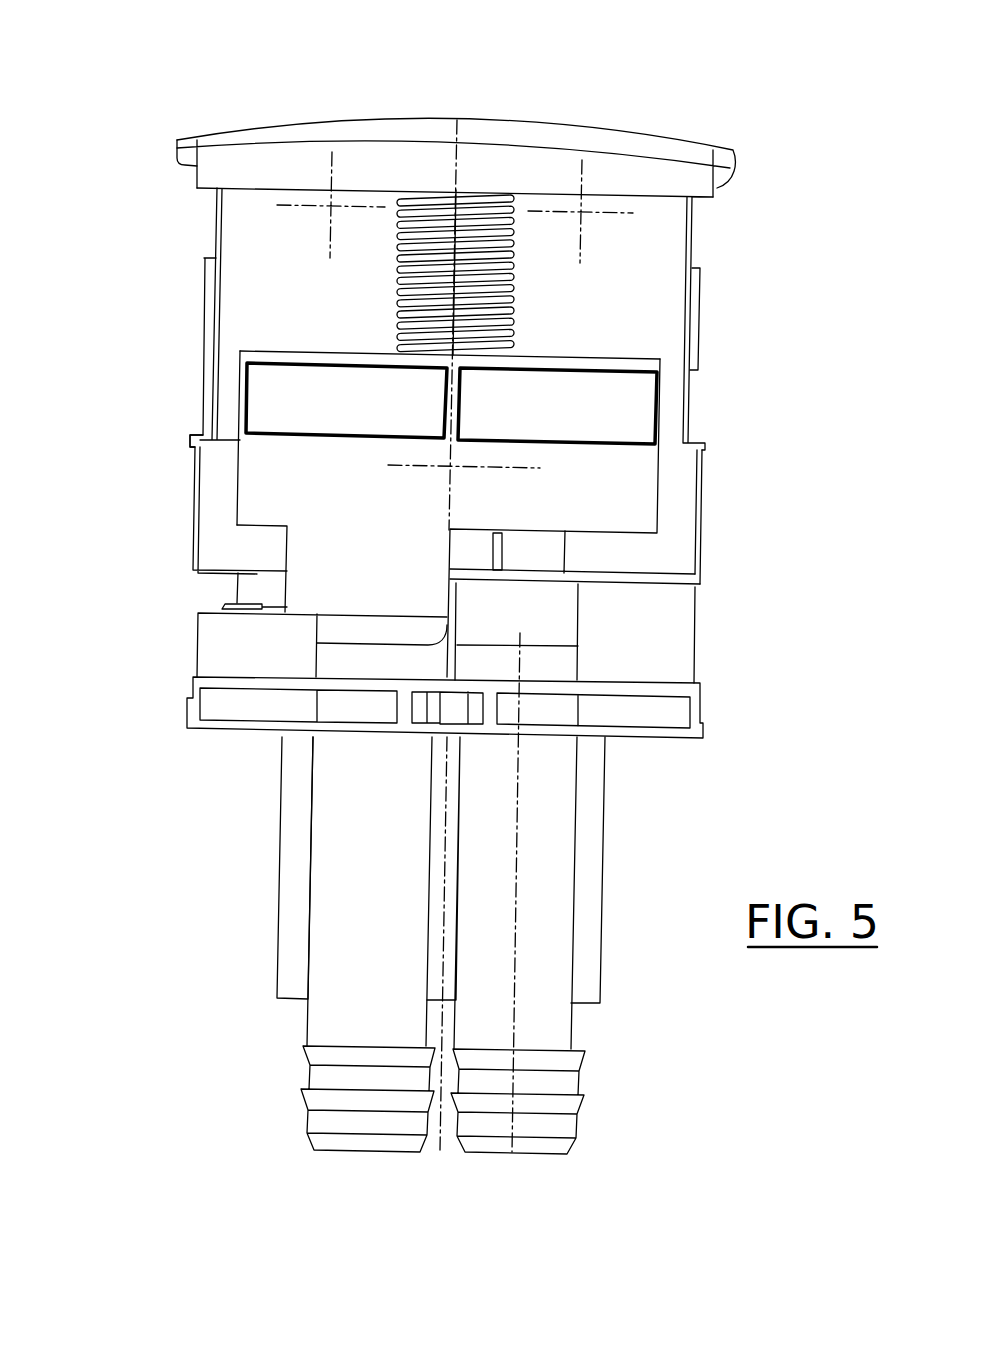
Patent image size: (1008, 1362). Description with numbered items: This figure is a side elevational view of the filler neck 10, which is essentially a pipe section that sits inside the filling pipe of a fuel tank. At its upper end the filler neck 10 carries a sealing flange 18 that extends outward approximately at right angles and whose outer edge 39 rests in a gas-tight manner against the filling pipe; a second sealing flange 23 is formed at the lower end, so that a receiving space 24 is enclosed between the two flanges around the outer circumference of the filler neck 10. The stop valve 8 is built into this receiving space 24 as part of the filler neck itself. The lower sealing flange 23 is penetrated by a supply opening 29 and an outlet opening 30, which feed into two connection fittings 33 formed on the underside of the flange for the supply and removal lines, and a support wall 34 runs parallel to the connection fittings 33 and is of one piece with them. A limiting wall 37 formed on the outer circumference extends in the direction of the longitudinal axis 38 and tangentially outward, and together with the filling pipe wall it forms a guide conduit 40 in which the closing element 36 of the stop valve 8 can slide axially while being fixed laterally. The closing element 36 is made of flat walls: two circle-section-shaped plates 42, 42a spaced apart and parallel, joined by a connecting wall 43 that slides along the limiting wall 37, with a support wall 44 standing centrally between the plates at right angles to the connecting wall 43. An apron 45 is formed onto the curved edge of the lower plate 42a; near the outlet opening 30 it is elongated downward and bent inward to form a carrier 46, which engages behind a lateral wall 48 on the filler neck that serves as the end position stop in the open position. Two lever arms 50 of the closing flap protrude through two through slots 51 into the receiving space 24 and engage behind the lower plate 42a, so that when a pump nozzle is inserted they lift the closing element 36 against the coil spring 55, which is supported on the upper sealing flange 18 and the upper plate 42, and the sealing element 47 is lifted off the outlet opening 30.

The stop valve 8 is at (615, 490).
The filler neck 10 is at (190, 217).
The sealing flange 18 is at (262, 130).
The sealing flange 23 is at (193, 702).
The receiving space 24 is at (258, 249).
The supply opening 29 is at (538, 680).
The outlet opening 30 is at (353, 677).
The connection fittings 33 is at (347, 1024).
The support wall 34 is at (590, 800).
The closing element 36 is at (602, 358).
The limiting wall 37 is at (627, 263).
The longitudinal axis 38 is at (447, 150).
The outer edge 39 is at (177, 148).
The guide conduit 40 is at (306, 290).
The plate 42 is at (257, 358).
The plate 42a is at (277, 433).
The connecting wall 43 is at (281, 395).
The support wall 44 is at (462, 408).
The apron 45 is at (283, 487).
The carrier 46 is at (255, 605).
The sealing element 47 is at (328, 630).
The lateral wall 48 is at (253, 572).
The lever arms 50 is at (500, 546).
The through slots 51 is at (502, 562).
The coil spring 55 is at (478, 208).